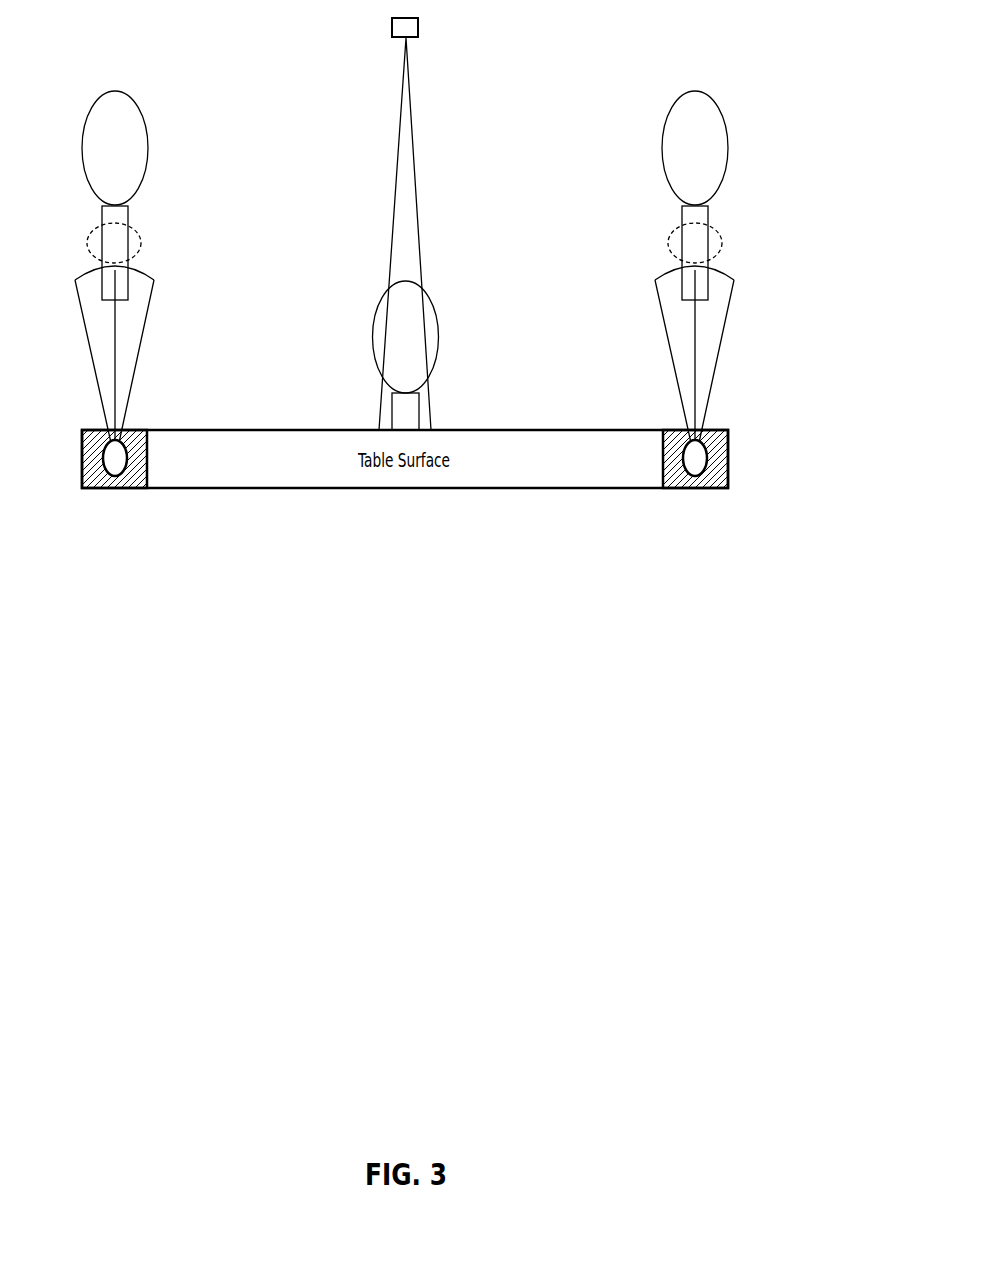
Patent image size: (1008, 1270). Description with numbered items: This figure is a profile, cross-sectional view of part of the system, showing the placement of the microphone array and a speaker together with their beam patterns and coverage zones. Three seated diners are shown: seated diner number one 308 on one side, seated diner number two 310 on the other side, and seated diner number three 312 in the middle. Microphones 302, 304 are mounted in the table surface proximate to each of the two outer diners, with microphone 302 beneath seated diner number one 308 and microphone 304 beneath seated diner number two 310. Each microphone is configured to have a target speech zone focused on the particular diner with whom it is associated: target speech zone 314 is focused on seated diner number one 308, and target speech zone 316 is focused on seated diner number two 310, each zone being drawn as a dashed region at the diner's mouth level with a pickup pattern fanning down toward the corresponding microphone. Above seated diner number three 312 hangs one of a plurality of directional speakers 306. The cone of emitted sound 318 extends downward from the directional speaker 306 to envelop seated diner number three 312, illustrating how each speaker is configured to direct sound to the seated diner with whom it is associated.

The microphone 302 is at (115, 498).
The microphone 304 is at (695, 497).
The directional speaker 306 is at (404, 49).
The seated diner number one 308 is at (184, 273).
The seated diner number two 310 is at (764, 273).
The seated diner number three 312 is at (481, 355).
The target speech zone 314 is at (184, 245).
The target speech zone 316 is at (765, 245).
The cone of emitted sound 318 is at (461, 234).